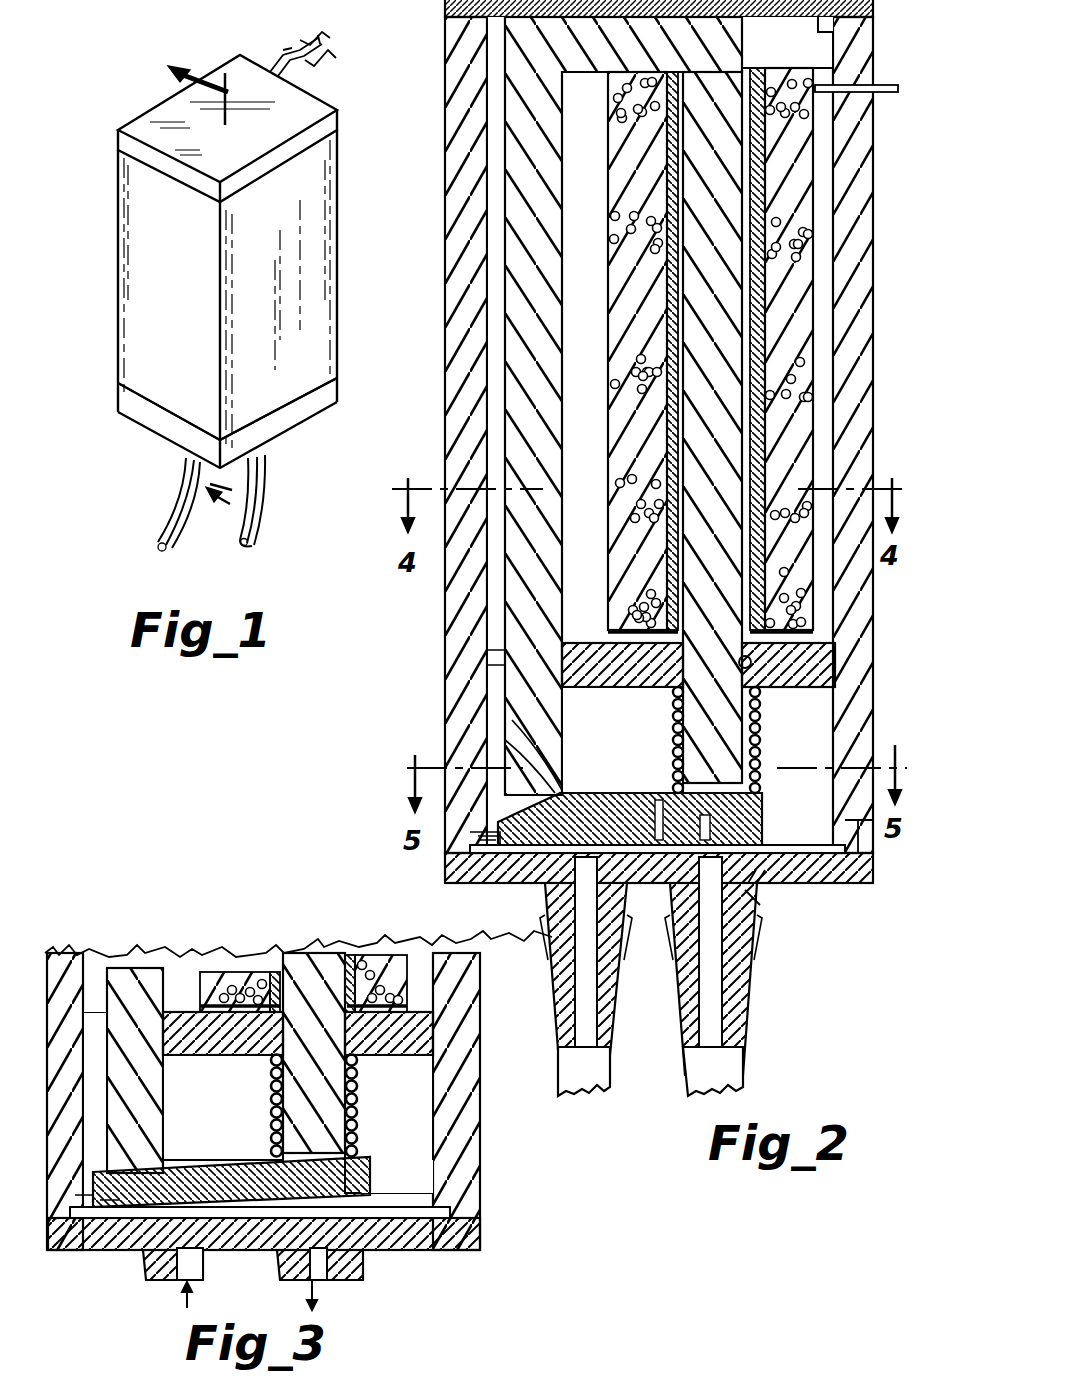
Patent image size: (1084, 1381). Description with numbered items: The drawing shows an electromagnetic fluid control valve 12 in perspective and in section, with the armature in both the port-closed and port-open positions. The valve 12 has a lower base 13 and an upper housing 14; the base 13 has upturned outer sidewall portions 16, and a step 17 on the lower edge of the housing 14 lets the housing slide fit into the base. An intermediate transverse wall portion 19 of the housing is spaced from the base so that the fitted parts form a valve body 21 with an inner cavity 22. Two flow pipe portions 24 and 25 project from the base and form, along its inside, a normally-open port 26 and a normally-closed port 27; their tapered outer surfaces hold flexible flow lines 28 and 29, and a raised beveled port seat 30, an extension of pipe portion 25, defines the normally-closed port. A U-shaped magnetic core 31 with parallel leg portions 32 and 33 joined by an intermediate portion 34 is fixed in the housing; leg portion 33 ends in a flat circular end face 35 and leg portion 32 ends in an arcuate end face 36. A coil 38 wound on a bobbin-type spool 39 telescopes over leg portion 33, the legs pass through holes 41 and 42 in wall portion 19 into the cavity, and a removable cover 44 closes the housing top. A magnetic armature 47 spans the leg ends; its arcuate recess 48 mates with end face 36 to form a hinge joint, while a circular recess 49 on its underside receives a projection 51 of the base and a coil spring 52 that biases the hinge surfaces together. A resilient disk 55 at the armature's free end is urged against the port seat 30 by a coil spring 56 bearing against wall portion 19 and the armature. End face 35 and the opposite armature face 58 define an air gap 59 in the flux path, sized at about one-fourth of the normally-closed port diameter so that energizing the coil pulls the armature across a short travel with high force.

In FIG. 1, the electromagnetic fluid control valve 12 is at (118, 245).
In FIG. 2, the electromagnetic fluid control valve 12 is at (358, 708).
In FIG. 1, the lower base 13 is at (300, 410).
In FIG. 2, the lower base 13 is at (882, 892).
In FIG. 1, the upper housing 14 is at (300, 227).
In FIG. 2, the upper housing 14 is at (750, 668).
In FIG. 2, the upturned outer sidewall portions 16 is at (858, 828).
In FIG. 3, the upturned outer sidewall portions 16 is at (478, 1232).
In FIG. 2, the step 17 is at (872, 884).
In FIG. 2, the intermediate transverse wall portion 19 is at (620, 688).
In FIG. 2, the valve body 21 is at (877, 720).
In FIG. 2, the inner cavity 22 is at (650, 755).
In FIG. 2, the flow pipe portion 24 is at (548, 984).
In FIG. 2, the flow pipe portion 25 is at (752, 1010).
In FIG. 2, the normally-open port 26 is at (562, 892).
In FIG. 3, the normally-open port 26 is at (150, 1275).
In FIG. 2, the normally-closed port 27 is at (755, 950).
In FIG. 3, the normally-closed port 27 is at (320, 1280).
In FIG. 1, the flexible flow line 28 is at (178, 520).
In FIG. 2, the flexible flow line 28 is at (552, 1012).
In FIG. 1, the flexible flow line 29 is at (268, 512).
In FIG. 2, the flexible flow line 29 is at (748, 1065).
In FIG. 3, the port seat 30 is at (268, 1262).
In FIG. 2, the magnetic core 31 is at (502, 280).
In FIG. 3, the magnetic core 31 is at (163, 1108).
In FIG. 2, the leg portion 32 is at (522, 216).
In FIG. 2, the leg portion 33 is at (718, 278).
In FIG. 2, the intermediate portion 34 is at (612, 41).
In FIG. 2, the flat end face 35 is at (780, 878).
In FIG. 2, the arcuate end face 36 is at (505, 762).
In FIG. 2, the coil 38 is at (790, 353).
In FIG. 2, the bobbin-type spool 39 is at (770, 141).
In FIG. 2, the hole 41 is at (470, 658).
In FIG. 2, the hole 42 is at (750, 665).
In FIG. 1, the removable cover 44 is at (172, 135).
In FIG. 2, the removable cover 44 is at (455, 5).
In FIG. 3, the magnetic armature 47 is at (228, 1164).
In FIG. 2, the arcuate recess 48 is at (520, 722).
In FIG. 2, the circular recess 49 is at (579, 791).
In FIG. 2, the projection 51 is at (482, 882).
In FIG. 2, the coil spring 52 is at (500, 845).
In FIG. 3, the resilient disk 55 is at (350, 1170).
In FIG. 2, the coil spring 56 is at (762, 714).
In FIG. 3, the coil spring 56 is at (360, 1100).
In FIG. 2, the opposite face 58 is at (758, 908).
In FIG. 2, the air gap 59 is at (645, 795).